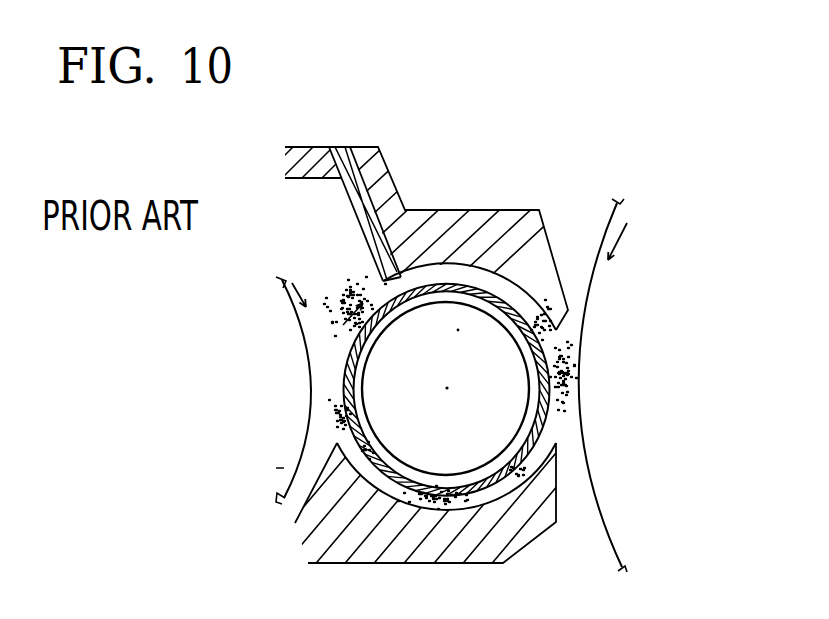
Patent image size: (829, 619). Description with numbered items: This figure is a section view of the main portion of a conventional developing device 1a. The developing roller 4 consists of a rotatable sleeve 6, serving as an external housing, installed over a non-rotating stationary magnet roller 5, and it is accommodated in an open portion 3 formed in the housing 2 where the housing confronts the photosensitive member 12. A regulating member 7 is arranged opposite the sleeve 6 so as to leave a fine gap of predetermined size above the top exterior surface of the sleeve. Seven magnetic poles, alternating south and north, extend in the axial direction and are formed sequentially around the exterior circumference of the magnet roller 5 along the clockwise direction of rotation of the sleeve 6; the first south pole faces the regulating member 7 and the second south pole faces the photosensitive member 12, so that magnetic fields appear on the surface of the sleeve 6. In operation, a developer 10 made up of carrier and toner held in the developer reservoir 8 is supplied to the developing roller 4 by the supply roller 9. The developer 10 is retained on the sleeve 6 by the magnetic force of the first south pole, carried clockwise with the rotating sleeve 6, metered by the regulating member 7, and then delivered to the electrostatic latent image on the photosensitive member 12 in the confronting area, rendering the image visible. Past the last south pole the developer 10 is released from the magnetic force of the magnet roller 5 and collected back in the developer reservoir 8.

The developing device 1a is at (526, 200).
The housing 2 is at (524, 533).
The open portion 3 is at (553, 435).
The developing roller 4 is at (553, 362).
The magnet roller 5 is at (440, 317).
The sleeve 6 is at (460, 283).
The regulating member 7 is at (358, 223).
The developer reservoir 8 is at (254, 318).
The supply roller 9 is at (309, 372).
The developer 10 is at (355, 283).
The photosensitive member 12 is at (598, 508).